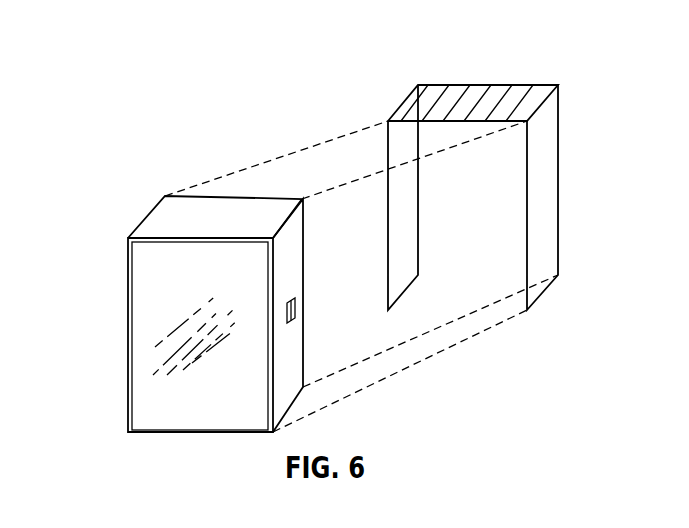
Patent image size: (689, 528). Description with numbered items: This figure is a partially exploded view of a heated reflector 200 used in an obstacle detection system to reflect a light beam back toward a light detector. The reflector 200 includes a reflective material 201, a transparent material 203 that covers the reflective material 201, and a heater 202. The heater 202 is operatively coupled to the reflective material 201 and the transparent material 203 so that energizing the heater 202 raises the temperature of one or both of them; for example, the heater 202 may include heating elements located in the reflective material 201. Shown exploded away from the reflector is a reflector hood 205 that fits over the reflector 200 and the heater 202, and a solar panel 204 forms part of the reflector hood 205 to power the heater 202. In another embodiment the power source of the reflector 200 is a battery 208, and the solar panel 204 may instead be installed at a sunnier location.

The heated reflector 200 is at (103, 441).
The reflective material 201 is at (129, 237).
The heater 202 is at (152, 218).
The transparent material 203 is at (131, 334).
The solar panel 204 is at (545, 85).
The reflector hood 205 is at (547, 193).
The battery 208 is at (297, 310).